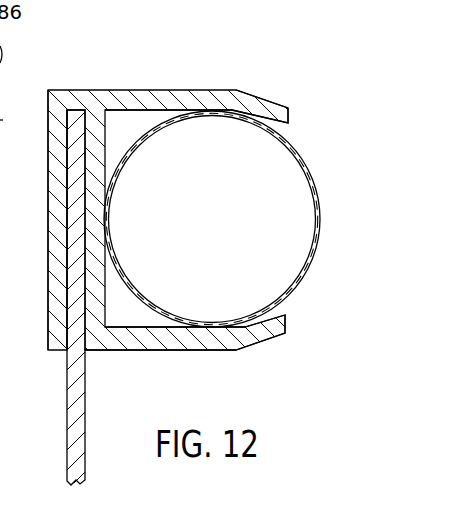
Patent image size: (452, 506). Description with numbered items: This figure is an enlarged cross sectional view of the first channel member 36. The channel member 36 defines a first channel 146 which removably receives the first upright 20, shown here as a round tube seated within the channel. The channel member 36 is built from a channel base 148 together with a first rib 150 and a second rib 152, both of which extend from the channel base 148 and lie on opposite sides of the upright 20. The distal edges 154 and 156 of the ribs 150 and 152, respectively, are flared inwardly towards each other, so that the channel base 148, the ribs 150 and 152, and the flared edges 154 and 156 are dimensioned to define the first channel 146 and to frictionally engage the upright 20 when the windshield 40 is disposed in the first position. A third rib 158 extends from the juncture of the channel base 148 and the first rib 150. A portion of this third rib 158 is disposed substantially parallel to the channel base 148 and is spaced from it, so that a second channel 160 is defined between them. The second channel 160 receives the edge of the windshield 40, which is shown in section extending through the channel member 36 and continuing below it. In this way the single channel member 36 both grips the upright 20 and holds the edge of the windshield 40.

The first channel member 36 is at (181, 85).
The windshield 40 is at (83, 433).
The first upright 20 is at (317, 186).
The first channel 146 is at (153, 110).
The channel base 148 is at (107, 312).
The first rib 150 is at (229, 89).
The second rib 152 is at (202, 352).
The distal edge of first rib 154 is at (282, 108).
The distal edge of second rib 156 is at (276, 328).
The third rib 158 is at (53, 178).
The second channel 160 is at (70, 220).